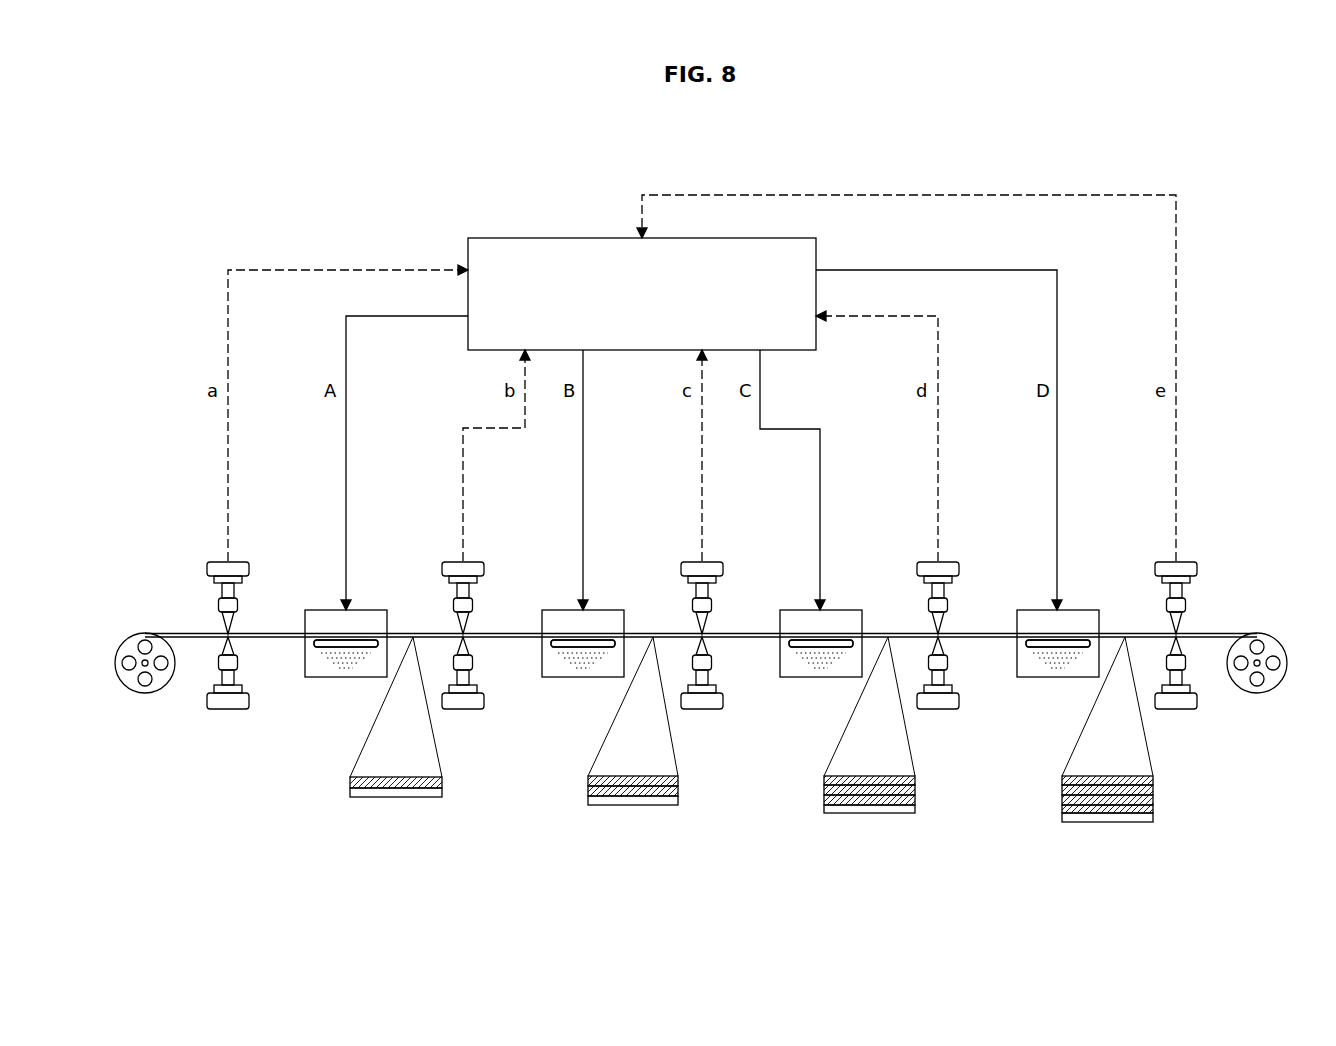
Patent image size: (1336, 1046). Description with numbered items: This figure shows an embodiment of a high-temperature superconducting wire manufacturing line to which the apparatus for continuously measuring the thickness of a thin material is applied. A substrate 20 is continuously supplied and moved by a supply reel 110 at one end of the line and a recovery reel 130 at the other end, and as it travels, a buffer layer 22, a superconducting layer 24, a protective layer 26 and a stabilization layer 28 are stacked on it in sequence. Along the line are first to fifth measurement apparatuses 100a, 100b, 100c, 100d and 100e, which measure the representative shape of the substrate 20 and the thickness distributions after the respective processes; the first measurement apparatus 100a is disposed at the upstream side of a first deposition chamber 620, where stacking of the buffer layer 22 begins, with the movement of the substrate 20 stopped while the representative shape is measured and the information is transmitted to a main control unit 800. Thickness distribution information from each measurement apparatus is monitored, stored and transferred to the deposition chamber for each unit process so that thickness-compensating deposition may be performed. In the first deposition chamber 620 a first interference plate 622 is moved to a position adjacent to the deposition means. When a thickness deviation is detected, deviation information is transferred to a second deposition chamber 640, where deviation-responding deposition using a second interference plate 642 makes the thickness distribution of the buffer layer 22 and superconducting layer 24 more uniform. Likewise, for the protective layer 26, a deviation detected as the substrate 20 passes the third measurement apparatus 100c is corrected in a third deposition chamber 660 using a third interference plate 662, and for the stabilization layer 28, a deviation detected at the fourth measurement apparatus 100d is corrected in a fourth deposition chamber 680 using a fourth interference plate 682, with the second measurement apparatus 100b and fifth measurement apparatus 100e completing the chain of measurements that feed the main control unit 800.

The substrate 20 is at (188, 632).
The buffer layer 22 is at (350, 786).
The superconducting layer 24 is at (588, 786).
The protective layer 26 is at (824, 786).
The stabilization layer 28 is at (1062, 786).
The first measurement apparatus 100a is at (198, 548).
The second measurement apparatus 100b is at (435, 548).
The third measurement apparatus 100c is at (673, 548).
The fourth measurement apparatus 100d is at (910, 548).
The fifth measurement apparatus 100e is at (1147, 548).
The supply reel 110 is at (144, 696).
The recovery reel 130 is at (1258, 696).
The first deposition chamber 620 is at (313, 608).
The first interference plate 622 is at (305, 646).
The second deposition chamber 640 is at (550, 608).
The second interference plate 642 is at (542, 646).
The third deposition chamber 660 is at (788, 608).
The third interference plate 662 is at (780, 646).
The fourth deposition chamber 680 is at (1025, 608).
The fourth interference plate 682 is at (1017, 646).
The main control unit 800 is at (527, 237).